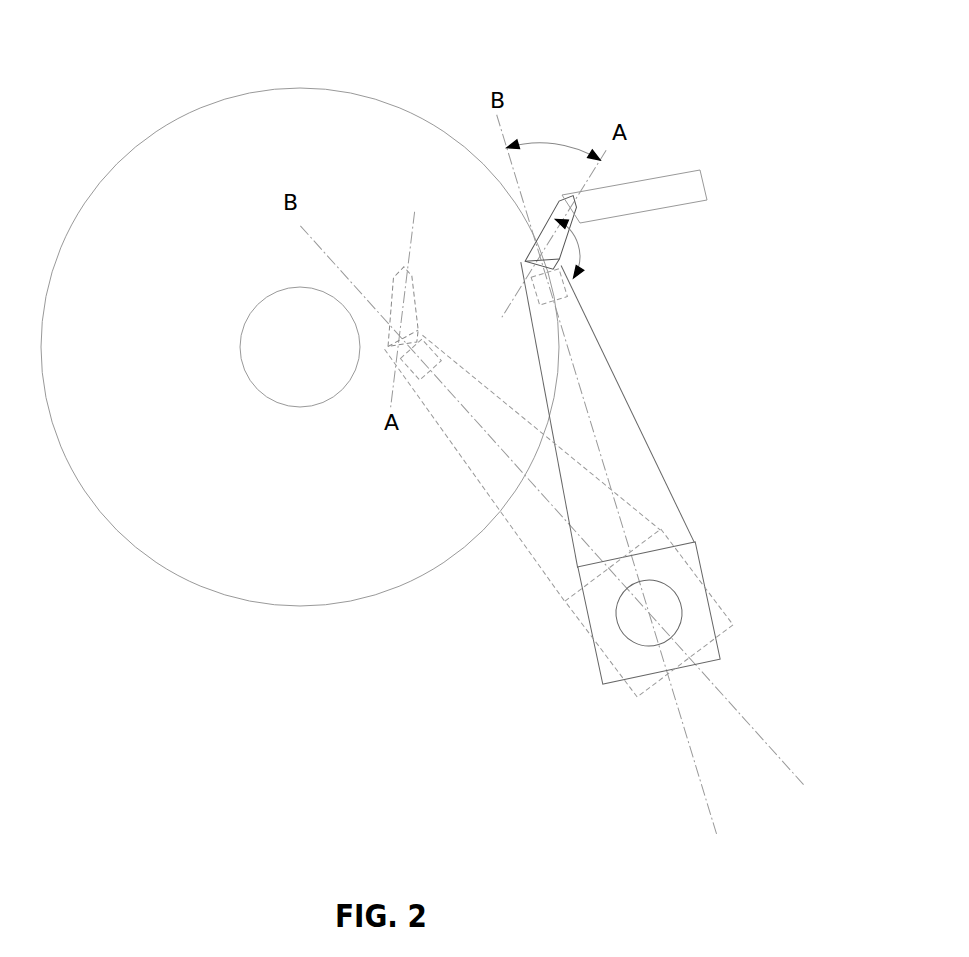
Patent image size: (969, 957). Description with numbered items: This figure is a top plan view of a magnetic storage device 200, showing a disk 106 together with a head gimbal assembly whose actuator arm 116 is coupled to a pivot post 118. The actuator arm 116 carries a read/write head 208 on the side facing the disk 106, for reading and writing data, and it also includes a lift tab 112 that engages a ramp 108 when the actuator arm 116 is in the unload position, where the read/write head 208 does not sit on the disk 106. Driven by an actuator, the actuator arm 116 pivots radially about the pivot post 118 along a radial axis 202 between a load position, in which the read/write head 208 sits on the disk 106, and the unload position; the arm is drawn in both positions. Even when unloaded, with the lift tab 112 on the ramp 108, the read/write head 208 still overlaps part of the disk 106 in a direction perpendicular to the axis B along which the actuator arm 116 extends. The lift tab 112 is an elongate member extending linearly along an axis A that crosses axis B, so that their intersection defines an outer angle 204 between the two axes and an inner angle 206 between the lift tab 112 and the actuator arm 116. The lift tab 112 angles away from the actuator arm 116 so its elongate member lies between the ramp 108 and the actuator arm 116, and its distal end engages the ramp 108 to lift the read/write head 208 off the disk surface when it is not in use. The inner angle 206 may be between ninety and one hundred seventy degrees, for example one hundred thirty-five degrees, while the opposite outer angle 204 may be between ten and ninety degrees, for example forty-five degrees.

The magnetic storage device 200 is at (140, 55).
The disk 106 is at (245, 518).
The ramp 108 is at (677, 170).
The lift tab 112 is at (397, 290).
The actuator arm 116 is at (493, 463).
The pivot post 118 is at (660, 625).
The radial axis 202 is at (488, 335).
The outer angle 204 is at (560, 140).
The inner angle 206 is at (593, 252).
The read/write head 208 is at (571, 285).